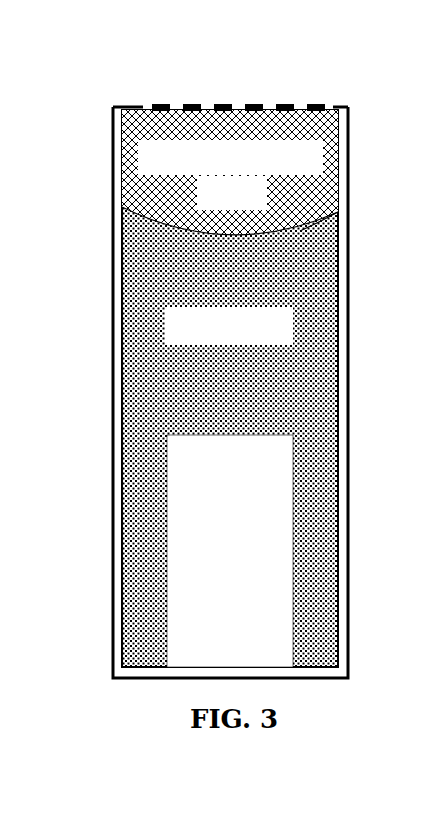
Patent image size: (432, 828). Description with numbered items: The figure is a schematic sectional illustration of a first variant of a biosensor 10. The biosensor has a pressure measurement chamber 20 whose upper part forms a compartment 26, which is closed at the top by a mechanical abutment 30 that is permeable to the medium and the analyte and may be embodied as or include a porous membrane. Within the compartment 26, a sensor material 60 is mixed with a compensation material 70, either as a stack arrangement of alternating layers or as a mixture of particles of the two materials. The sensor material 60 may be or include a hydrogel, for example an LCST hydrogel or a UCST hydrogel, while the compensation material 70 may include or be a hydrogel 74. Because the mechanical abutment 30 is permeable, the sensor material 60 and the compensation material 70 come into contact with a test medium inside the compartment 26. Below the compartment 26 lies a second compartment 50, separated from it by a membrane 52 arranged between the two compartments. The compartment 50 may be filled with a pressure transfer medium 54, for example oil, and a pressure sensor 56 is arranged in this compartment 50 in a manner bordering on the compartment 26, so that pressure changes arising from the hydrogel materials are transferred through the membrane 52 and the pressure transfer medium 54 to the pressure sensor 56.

The biosensor 10 is at (100, 80).
The pressure measurement chamber 20 is at (122, 241).
The compartment 26 is at (153, 189).
The mechanical abutment 30 is at (190, 104).
The compartment 50 is at (150, 373).
The membrane 52 is at (300, 230).
The pressure transfer medium 54 is at (229, 327).
The pressure sensor 56 is at (293, 535).
The sensor material 60 is at (230, 157).
The compensation material 70 is at (230, 157).
The hydrogel 74 is at (232, 194).